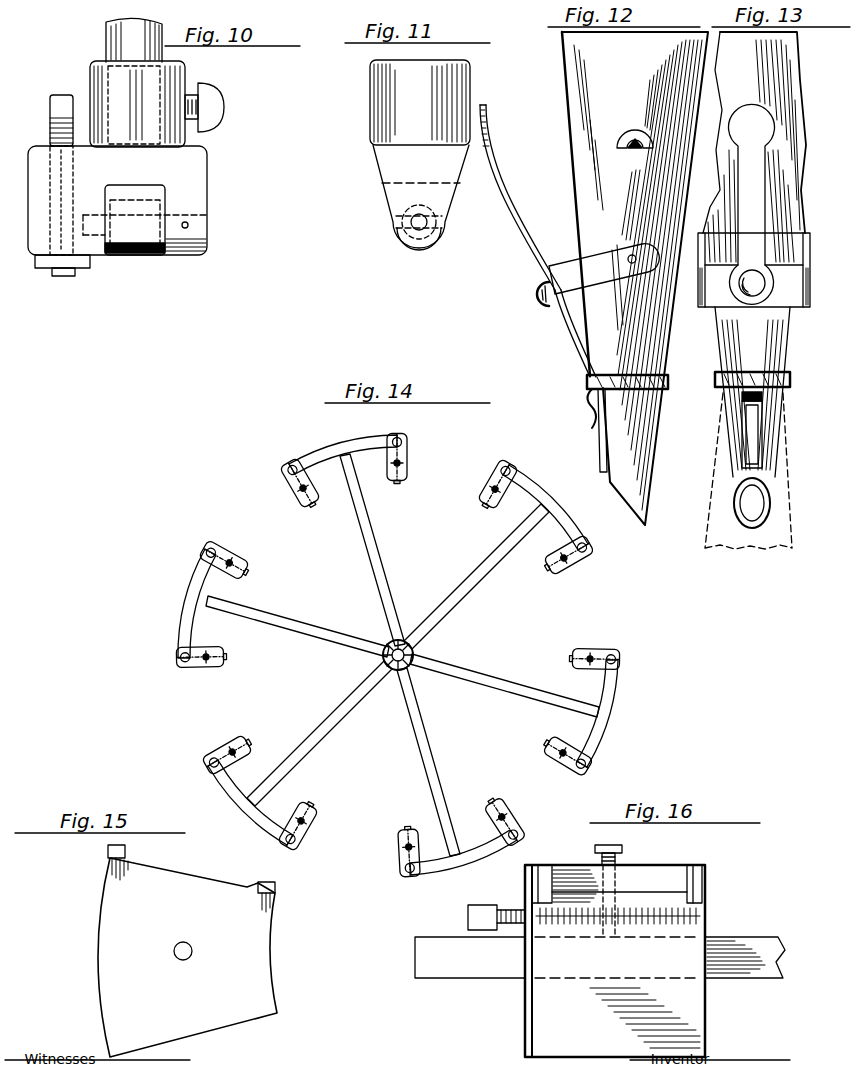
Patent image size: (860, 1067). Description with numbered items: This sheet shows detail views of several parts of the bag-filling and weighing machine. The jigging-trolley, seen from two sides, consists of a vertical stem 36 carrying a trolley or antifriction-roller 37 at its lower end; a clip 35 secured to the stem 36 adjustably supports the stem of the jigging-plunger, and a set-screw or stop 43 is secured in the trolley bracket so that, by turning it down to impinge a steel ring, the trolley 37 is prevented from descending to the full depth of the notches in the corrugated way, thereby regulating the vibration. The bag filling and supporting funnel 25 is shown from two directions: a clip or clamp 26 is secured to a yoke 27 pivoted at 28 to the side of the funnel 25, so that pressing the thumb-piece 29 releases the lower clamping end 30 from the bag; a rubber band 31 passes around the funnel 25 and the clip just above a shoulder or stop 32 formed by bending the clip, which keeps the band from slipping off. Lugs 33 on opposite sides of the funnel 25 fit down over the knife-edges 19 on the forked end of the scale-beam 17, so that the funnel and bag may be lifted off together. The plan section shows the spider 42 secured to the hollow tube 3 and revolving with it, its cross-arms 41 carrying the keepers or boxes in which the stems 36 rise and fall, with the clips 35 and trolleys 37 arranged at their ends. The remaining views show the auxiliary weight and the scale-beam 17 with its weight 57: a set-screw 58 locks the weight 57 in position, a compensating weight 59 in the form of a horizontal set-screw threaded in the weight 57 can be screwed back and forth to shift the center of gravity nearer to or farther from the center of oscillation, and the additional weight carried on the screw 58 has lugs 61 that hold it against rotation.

In FIG. 14, the hollow shaft or tube 3 is at (414, 656).
In FIG. 16, the scale-beam 17 is at (740, 985).
In FIG. 12, the knife-edges 19 is at (632, 152).
In FIG. 12, the bag filling and supporting funnel 25 is at (635, 278).
In FIG. 13, the bag filling and supporting funnel 25 is at (754, 290).
In FIG. 12, the clip or clamp 26 is at (574, 340).
In FIG. 12, the yoke 27 is at (565, 263).
In FIG. 13, the yoke 27 is at (706, 305).
In FIG. 12, the pivot 28 is at (622, 256).
In FIG. 12, the thumb-piece 29 is at (488, 155).
In FIG. 13, the thumb-piece 29 is at (752, 204).
In FIG. 12, the lower clamping end 30 is at (600, 440).
In FIG. 13, the lower clamping end 30 is at (748, 449).
In FIG. 12, the rubber band 31 is at (587, 380).
In FIG. 13, the rubber band 31 is at (715, 380).
In FIG. 12, the shoulder or stop 32 is at (588, 400).
In FIG. 13, the shoulder or stop 32 is at (742, 397).
In FIG. 12, the lugs 33 is at (618, 145).
In FIG. 14, the clip 35 is at (300, 490).
In FIG. 10, the vertical stem 36 is at (106, 42).
In FIG. 14, the vertical stem 36 is at (292, 470).
In FIG. 10, the trolley or antifriction-roller 37 is at (204, 178).
In FIG. 11, the trolley or antifriction-roller 37 is at (371, 112).
In FIG. 14, the cross-arms 41 is at (348, 445).
In FIG. 14, the spider 42 is at (372, 570).
In FIG. 10, the set-screws or stops 43 is at (55, 108).
In FIG. 16, the weights 57 is at (705, 932).
In FIG. 16, the set-screws 58 is at (598, 848).
In FIG. 16, the compensating weights 59 is at (485, 905).
In FIG. 15, the lugs 61 is at (118, 848).
In FIG. 16, the lugs 61 is at (545, 888).